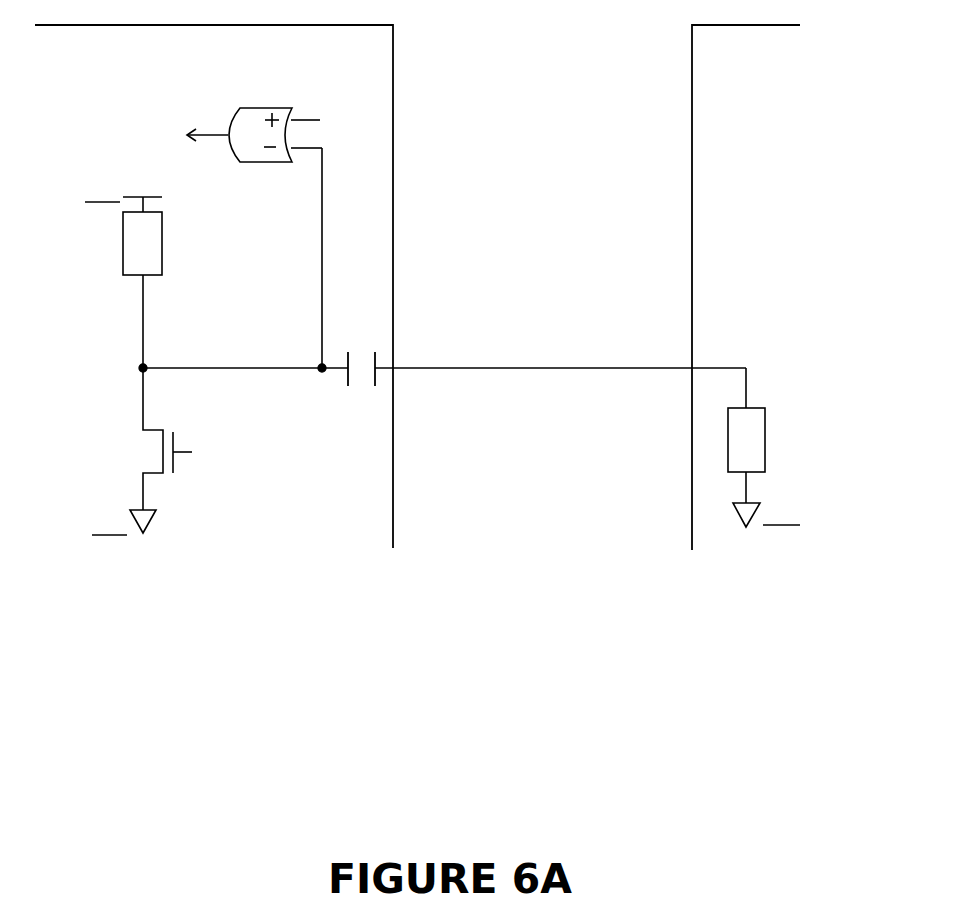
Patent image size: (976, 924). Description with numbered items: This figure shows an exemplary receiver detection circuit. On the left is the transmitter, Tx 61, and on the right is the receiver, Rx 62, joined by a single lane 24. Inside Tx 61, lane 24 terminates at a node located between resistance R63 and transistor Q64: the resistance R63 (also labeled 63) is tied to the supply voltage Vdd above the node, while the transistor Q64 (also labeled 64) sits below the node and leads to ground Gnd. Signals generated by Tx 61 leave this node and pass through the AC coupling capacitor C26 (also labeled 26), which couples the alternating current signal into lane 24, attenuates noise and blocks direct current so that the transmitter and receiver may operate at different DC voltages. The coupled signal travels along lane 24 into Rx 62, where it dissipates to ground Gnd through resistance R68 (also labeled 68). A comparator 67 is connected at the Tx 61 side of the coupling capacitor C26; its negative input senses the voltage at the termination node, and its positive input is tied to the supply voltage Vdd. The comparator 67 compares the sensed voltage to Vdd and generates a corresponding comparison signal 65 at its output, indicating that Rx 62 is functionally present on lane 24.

The Tx 61 is at (115, 60).
The Rx 62 is at (768, 56).
The comparison signal 65 is at (177, 129).
The comparator 67 is at (259, 156).
The resistance R63 is at (123, 274).
The resistance 63 is at (116, 239).
The transistor Q64 is at (142, 452).
The transistor 64 is at (142, 464).
The coupling capacitor C26 is at (364, 340).
The coupling capacitor 26 is at (358, 366).
The lane 24 is at (428, 367).
The resistance R68 is at (764, 447).
The resistance 68 is at (800, 449).